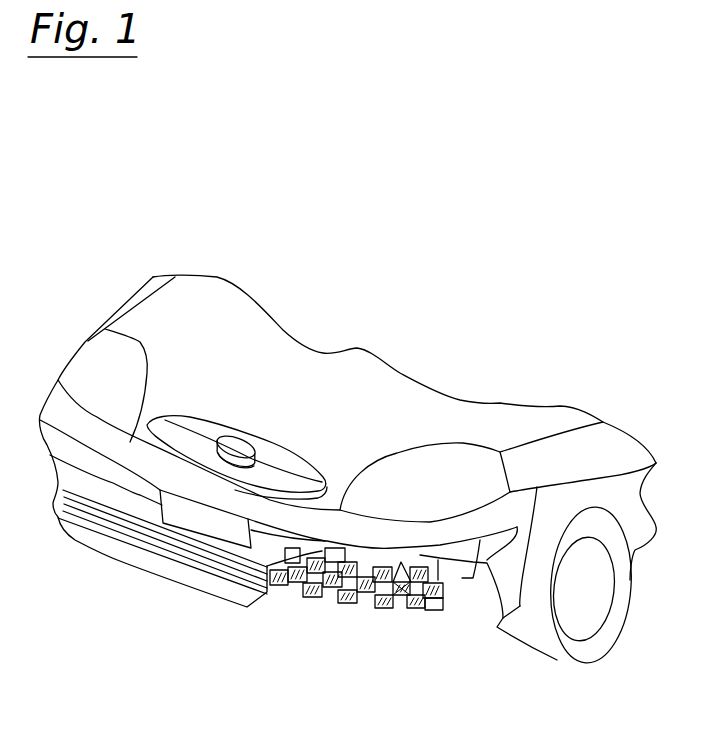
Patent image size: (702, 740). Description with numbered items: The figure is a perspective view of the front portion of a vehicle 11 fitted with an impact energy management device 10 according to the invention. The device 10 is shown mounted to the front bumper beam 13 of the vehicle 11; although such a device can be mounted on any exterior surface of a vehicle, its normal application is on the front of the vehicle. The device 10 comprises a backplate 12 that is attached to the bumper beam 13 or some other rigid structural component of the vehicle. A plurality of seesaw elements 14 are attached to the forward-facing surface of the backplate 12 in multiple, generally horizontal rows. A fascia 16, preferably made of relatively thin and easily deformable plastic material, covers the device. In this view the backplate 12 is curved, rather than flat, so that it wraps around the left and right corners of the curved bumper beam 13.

The impact energy management device 10 is at (396, 652).
The vehicle 11 is at (163, 243).
The backplate 12 is at (465, 565).
The front bumper beam 13 is at (487, 563).
The seesaw elements 14 is at (340, 600).
The fascia 16 is at (293, 590).